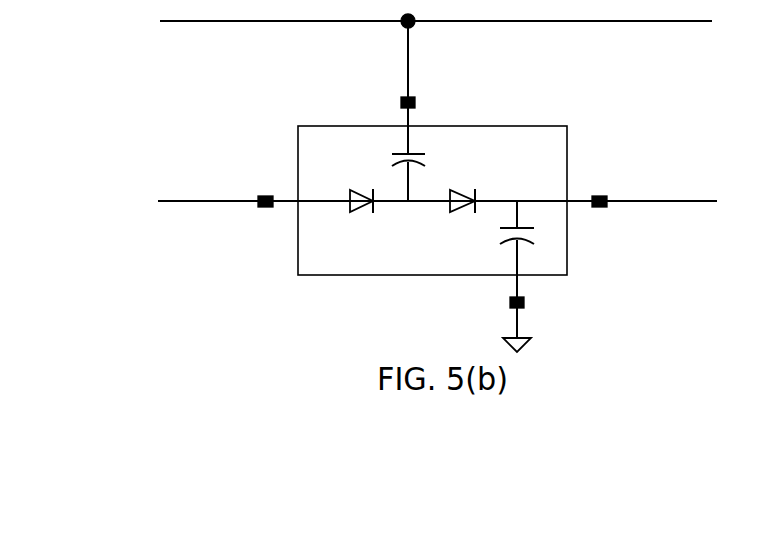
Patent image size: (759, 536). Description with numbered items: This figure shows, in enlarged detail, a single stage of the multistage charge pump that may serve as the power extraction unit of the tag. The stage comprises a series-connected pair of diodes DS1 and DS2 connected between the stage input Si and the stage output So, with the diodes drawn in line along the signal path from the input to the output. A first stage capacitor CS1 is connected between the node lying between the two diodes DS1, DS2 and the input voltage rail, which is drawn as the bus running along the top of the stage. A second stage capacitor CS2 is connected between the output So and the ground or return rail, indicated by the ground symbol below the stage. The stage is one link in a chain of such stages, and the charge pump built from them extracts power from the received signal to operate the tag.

The first stage capacitor CS1 is at (424, 167).
The second stage capacitor CS2 is at (538, 276).
The first diode DS1 is at (370, 225).
The second diode DS2 is at (470, 225).
The stage input Si is at (208, 213).
The stage output So is at (662, 183).